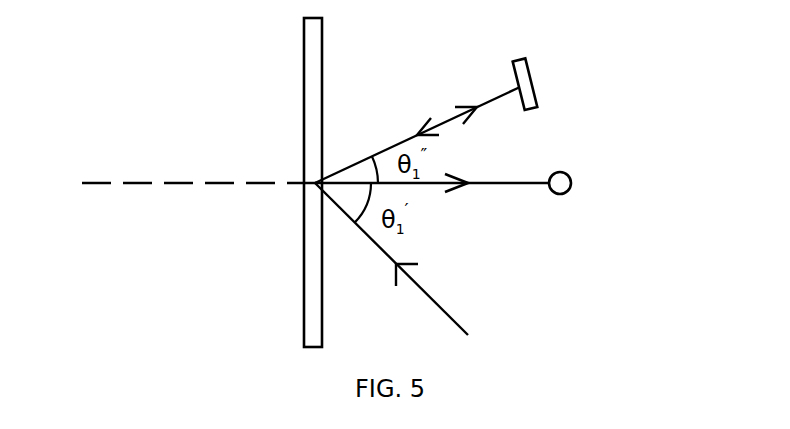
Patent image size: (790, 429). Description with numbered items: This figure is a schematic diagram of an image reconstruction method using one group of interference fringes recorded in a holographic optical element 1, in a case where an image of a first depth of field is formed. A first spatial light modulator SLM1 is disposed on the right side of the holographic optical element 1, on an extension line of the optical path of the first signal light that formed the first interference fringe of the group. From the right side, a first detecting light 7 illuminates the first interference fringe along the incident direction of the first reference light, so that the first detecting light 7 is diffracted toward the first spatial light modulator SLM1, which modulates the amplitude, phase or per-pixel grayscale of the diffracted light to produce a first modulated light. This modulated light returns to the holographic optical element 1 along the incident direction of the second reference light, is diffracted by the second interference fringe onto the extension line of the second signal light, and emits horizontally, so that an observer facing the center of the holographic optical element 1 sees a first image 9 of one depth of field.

The holographic optical element 1 is at (323, 50).
The first spatial light modulator SLM1 is at (526, 59).
The first image 9 is at (571, 178).
The first detecting light 7 is at (462, 330).